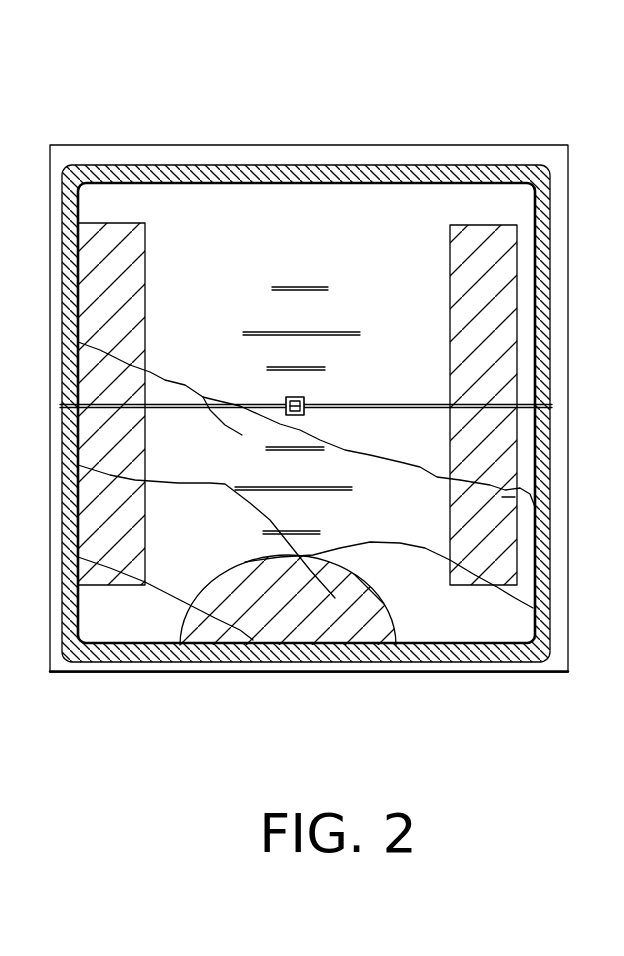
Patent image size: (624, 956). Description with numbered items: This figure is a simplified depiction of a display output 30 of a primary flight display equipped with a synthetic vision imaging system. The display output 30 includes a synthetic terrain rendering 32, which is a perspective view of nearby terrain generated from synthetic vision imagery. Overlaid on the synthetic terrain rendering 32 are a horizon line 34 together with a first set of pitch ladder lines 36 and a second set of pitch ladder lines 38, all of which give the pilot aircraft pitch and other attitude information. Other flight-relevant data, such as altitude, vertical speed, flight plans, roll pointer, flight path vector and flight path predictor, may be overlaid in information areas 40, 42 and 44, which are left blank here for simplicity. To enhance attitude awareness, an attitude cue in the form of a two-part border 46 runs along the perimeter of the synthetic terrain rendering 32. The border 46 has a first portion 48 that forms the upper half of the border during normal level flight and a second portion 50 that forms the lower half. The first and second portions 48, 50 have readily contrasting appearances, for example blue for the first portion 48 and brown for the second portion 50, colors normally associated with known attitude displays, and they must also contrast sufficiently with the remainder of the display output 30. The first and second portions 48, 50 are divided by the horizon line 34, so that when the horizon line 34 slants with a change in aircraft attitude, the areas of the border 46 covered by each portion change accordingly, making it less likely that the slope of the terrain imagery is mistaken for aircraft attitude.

The display output 30 is at (293, 122).
The synthetic terrain rendering 32 is at (140, 625).
The horizon line 34 is at (411, 408).
The first set of pitch ladder lines 36 is at (328, 333).
The second set of pitch ladder lines 38 is at (302, 530).
The information area 40 is at (210, 630).
The information area 42 is at (102, 240).
The information area 44 is at (545, 603).
The border 46 is at (230, 166).
The first portion 48 is at (415, 167).
The second portion 50 is at (450, 647).